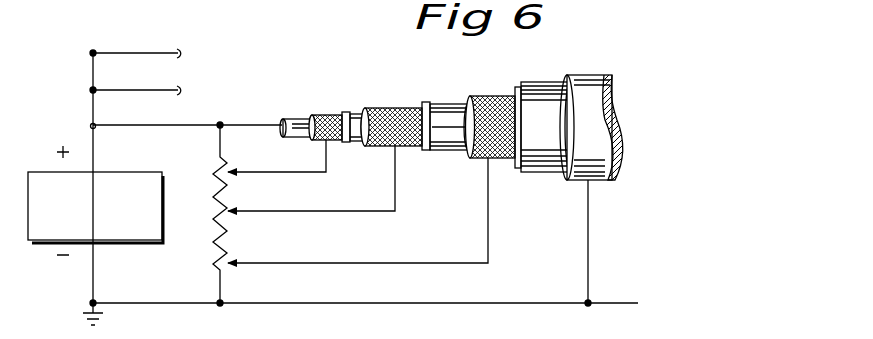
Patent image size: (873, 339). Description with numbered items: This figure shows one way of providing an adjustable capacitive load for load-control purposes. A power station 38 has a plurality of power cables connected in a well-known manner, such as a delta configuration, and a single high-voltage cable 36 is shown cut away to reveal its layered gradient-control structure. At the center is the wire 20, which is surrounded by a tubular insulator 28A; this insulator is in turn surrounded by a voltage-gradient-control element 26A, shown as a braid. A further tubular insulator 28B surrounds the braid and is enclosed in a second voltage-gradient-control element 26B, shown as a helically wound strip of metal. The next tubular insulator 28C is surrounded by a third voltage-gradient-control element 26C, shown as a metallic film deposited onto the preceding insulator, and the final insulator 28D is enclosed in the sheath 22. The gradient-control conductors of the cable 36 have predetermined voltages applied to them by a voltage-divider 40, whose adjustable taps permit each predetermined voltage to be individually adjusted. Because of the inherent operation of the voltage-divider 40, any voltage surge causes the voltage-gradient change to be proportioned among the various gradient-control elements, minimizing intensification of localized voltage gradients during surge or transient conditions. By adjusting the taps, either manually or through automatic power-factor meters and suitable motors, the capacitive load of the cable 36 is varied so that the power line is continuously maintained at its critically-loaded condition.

The wire 20 is at (251, 125).
The sheath 22 is at (616, 89).
The voltage-gradient-control element 26A is at (323, 113).
The second voltage-gradient-control element 26B is at (410, 106).
The third voltage-gradient-control element 26C is at (493, 100).
The tubular insulator 28A is at (291, 139).
The tubular insulator 28B is at (353, 110).
The tubular insulator 28C is at (452, 152).
The final insulator 28D is at (546, 90).
The high-voltage cable 36 is at (449, 93).
The power station 38 is at (104, 172).
The voltage-divider 40 is at (213, 246).